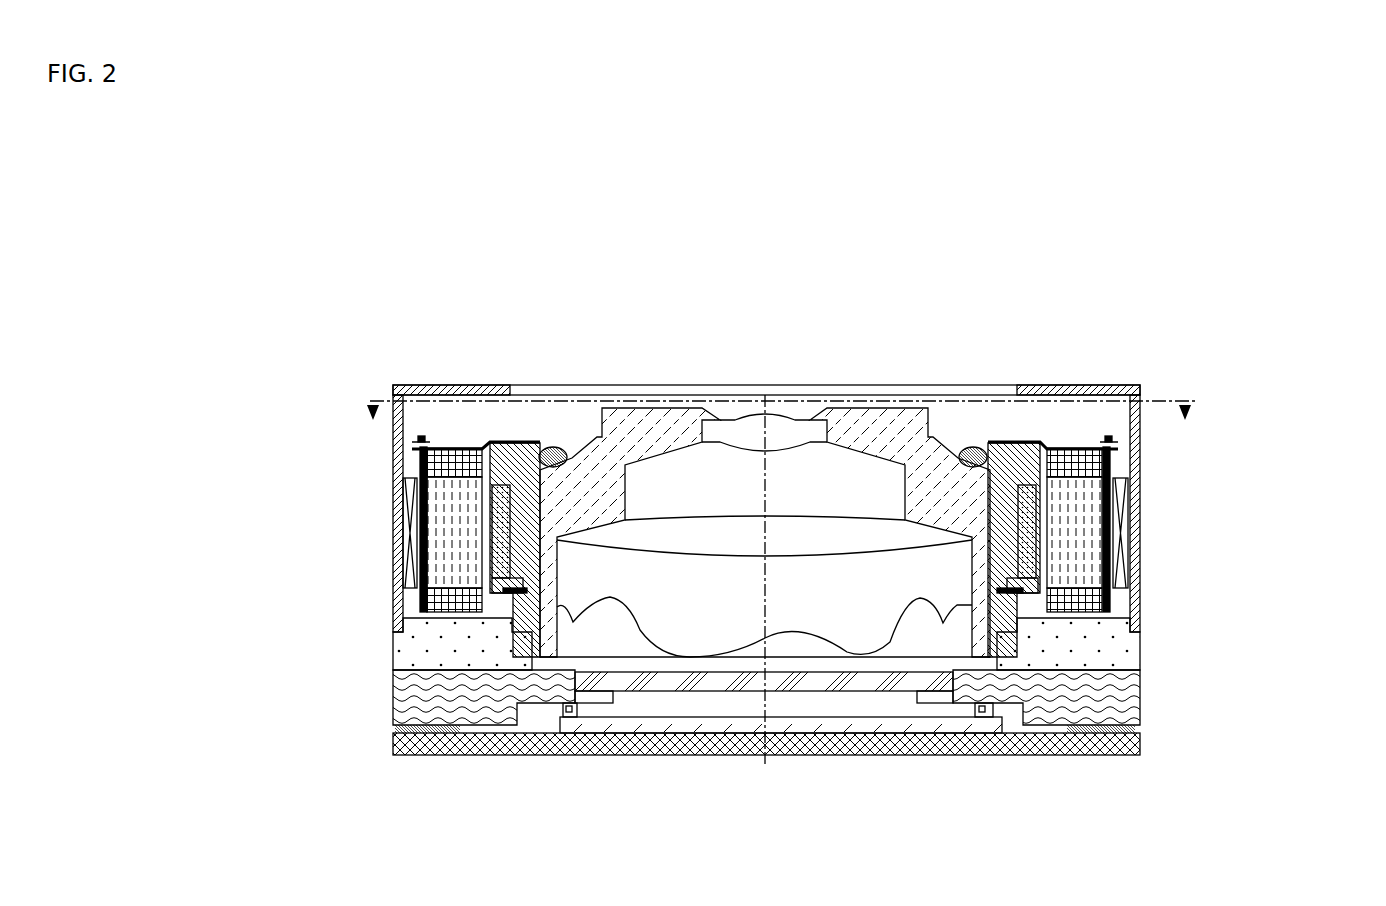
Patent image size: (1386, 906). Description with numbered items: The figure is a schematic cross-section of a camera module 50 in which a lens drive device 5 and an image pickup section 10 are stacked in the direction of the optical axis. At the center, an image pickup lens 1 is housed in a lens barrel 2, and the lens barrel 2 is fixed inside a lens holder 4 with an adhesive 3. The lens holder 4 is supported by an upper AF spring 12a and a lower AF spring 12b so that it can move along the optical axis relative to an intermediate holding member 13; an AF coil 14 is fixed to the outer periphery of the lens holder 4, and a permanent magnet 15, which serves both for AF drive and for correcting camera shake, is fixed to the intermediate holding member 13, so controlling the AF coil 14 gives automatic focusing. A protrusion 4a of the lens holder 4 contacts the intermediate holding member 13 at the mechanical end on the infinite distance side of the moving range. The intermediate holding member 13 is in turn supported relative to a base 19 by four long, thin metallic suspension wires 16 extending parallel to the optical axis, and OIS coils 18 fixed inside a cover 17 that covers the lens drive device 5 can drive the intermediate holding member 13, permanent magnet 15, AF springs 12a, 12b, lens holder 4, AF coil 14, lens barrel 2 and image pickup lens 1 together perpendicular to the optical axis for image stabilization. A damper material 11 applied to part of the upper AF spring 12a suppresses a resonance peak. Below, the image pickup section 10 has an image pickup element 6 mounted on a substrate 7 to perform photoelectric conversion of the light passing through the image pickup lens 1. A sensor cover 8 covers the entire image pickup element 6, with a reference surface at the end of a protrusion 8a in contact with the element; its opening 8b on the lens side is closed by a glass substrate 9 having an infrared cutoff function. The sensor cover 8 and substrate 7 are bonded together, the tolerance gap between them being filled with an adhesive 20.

The image pickup lens 1 is at (793, 587).
The lens barrel 2 is at (868, 420).
The adhesive 3 is at (972, 452).
The lens holder 4 is at (535, 442).
The protrusion 4a is at (503, 593).
The lens drive device 5 is at (1147, 385).
The image pickup element 6 is at (838, 722).
The substrate 7 is at (989, 748).
The sensor cover 8 is at (400, 698).
The protrusion 8a is at (570, 718).
The opening 8b is at (708, 708).
The glass substrate 9 is at (897, 688).
The image pickup section 10 is at (1147, 755).
The damper material 11 is at (1113, 440).
The AF spring 12a is at (1045, 440).
The AF spring 12b is at (1008, 593).
The intermediate holding member 13 is at (445, 447).
The AF coil 14 is at (492, 567).
The permanent magnet 15 is at (440, 487).
The suspension wire 16 is at (410, 513).
The cover 17 is at (472, 385).
The OIS coil 18 is at (400, 540).
The base 19 is at (407, 647).
The adhesive 20 is at (418, 733).
The camera module 50 is at (1045, 262).